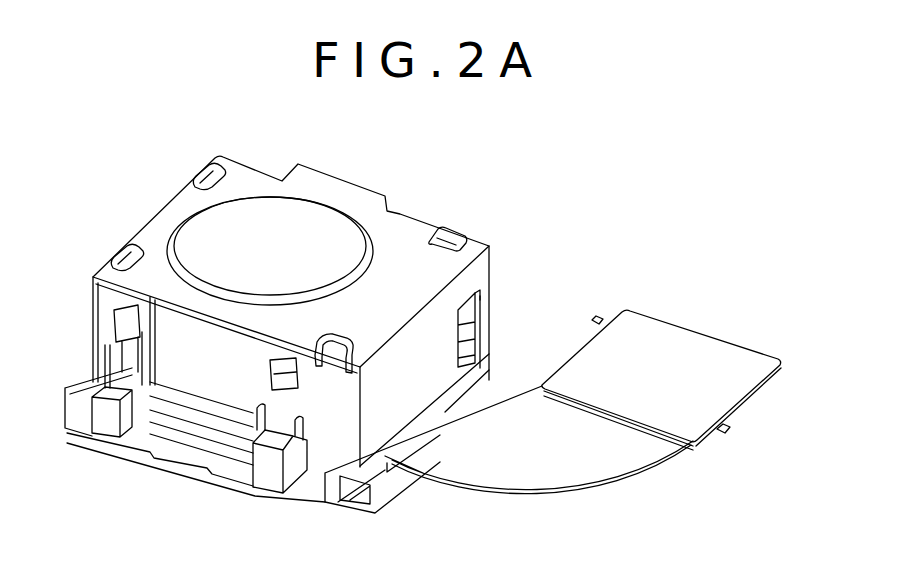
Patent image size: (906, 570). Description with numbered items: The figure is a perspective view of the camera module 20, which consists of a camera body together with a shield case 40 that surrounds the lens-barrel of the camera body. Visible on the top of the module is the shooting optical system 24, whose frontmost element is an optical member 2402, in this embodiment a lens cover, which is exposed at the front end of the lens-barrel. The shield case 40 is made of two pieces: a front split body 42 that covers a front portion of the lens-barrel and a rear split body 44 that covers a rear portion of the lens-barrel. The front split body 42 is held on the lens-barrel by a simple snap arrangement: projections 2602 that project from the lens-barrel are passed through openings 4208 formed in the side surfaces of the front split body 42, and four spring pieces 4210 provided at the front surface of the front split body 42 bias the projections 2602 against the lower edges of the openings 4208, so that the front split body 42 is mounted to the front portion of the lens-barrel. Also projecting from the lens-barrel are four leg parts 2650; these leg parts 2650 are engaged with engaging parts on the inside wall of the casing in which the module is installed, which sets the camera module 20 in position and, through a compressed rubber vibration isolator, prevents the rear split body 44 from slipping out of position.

The camera module 20 is at (470, 152).
The shooting optical system 24 is at (257, 242).
The optical member 2402 is at (299, 220).
The shield case 40 is at (381, 181).
The front split body 42 is at (394, 247).
The spring pieces 4210 is at (122, 247).
The projections 2602 is at (114, 325).
The leg parts 2650 is at (113, 425).
The openings 4208 is at (296, 490).
The rear split body 44 is at (392, 509).